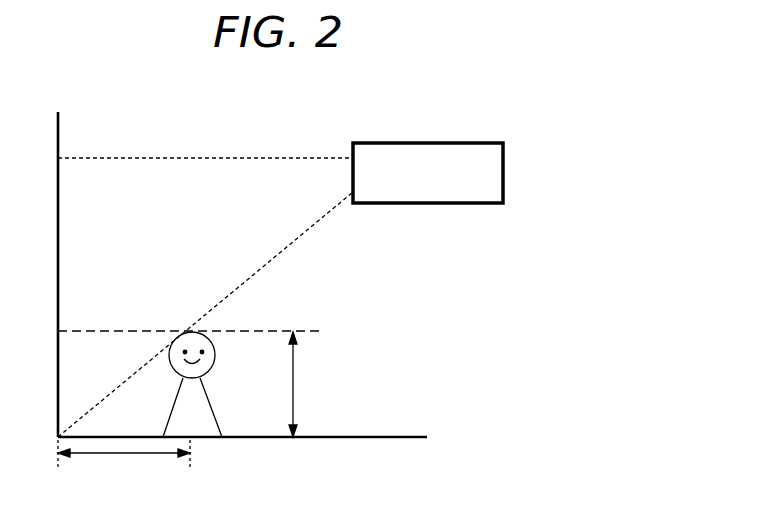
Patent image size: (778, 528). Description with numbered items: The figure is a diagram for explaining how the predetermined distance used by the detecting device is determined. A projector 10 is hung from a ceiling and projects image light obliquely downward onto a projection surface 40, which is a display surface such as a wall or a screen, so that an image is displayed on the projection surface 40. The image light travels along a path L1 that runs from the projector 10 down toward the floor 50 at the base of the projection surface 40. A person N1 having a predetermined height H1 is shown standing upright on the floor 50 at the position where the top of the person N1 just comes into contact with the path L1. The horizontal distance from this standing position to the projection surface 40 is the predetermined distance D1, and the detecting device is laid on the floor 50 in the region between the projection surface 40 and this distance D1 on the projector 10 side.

The projection surface 40 is at (58, 127).
The floor 50 is at (355, 437).
The projector 10 is at (425, 143).
The path L1 is at (240, 245).
The person N1 is at (200, 432).
The predetermined height H1 is at (309, 384).
The predetermined distance D1 is at (133, 458).